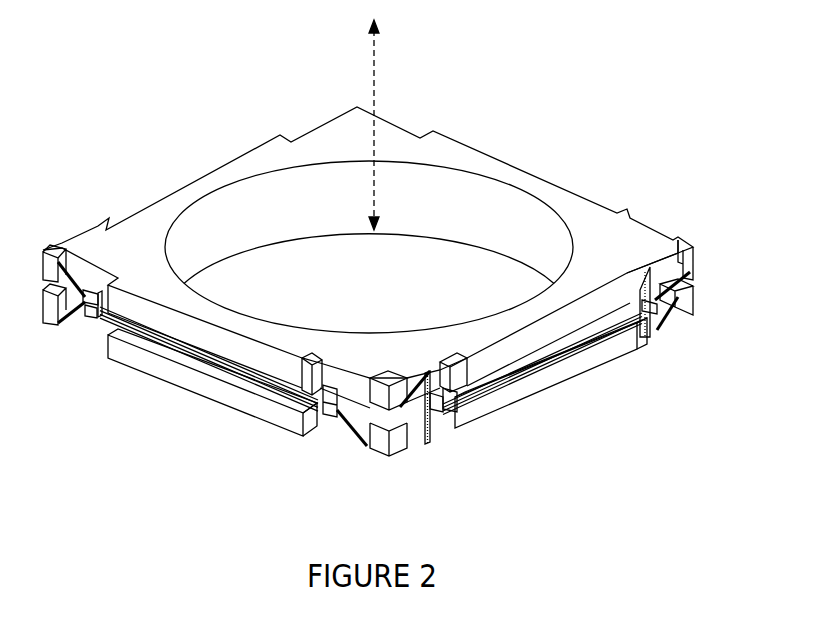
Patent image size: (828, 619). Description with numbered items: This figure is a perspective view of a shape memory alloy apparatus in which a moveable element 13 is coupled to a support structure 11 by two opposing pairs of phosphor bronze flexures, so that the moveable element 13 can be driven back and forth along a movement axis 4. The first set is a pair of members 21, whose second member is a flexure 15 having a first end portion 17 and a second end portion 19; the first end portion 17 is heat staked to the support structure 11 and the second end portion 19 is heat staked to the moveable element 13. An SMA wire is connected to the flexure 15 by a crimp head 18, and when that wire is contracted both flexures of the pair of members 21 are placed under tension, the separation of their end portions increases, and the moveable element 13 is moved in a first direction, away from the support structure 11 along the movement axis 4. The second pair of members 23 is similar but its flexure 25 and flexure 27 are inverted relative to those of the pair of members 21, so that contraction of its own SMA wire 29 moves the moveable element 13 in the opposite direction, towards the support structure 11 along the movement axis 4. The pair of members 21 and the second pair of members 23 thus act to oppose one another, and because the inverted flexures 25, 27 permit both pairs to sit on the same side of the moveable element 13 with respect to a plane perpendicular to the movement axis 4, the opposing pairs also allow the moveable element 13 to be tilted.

The movement axis 4 is at (374, 66).
The support structure 11 is at (687, 316).
The moveable element 13 is at (555, 186).
The flexure 15 is at (437, 412).
The first end portion 17 is at (392, 458).
The crimp head 18 is at (458, 413).
The second end portion 19 is at (425, 374).
The pair of members 21 is at (627, 333).
The second pair of members 23 is at (93, 320).
The flexure 25 is at (72, 326).
The flexure 27 is at (330, 418).
The SMA wire 29 is at (197, 353).